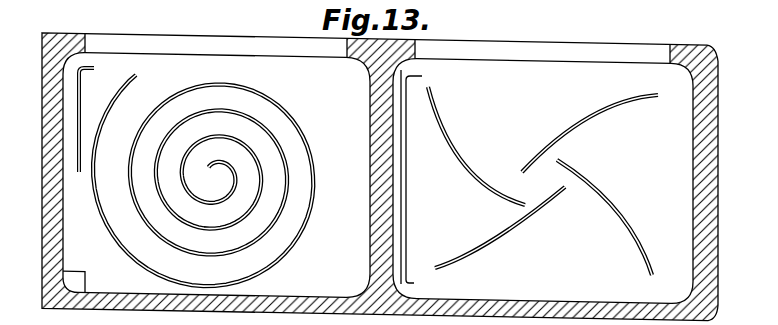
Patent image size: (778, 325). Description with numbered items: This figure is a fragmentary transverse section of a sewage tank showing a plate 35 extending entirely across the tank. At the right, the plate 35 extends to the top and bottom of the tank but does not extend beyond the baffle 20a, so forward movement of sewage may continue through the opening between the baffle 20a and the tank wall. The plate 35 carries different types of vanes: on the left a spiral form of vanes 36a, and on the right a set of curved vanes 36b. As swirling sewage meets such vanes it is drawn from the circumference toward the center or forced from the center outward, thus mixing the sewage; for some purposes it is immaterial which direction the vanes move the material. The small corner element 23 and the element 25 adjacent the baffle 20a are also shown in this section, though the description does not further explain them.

The corner filler block 23 is at (74, 278).
The liner wall 25 is at (402, 158).
The baffle 20a is at (408, 209).
The plate 35 is at (380, 177).
The vanes 36a is at (257, 96).
The vanes 36b is at (578, 122).